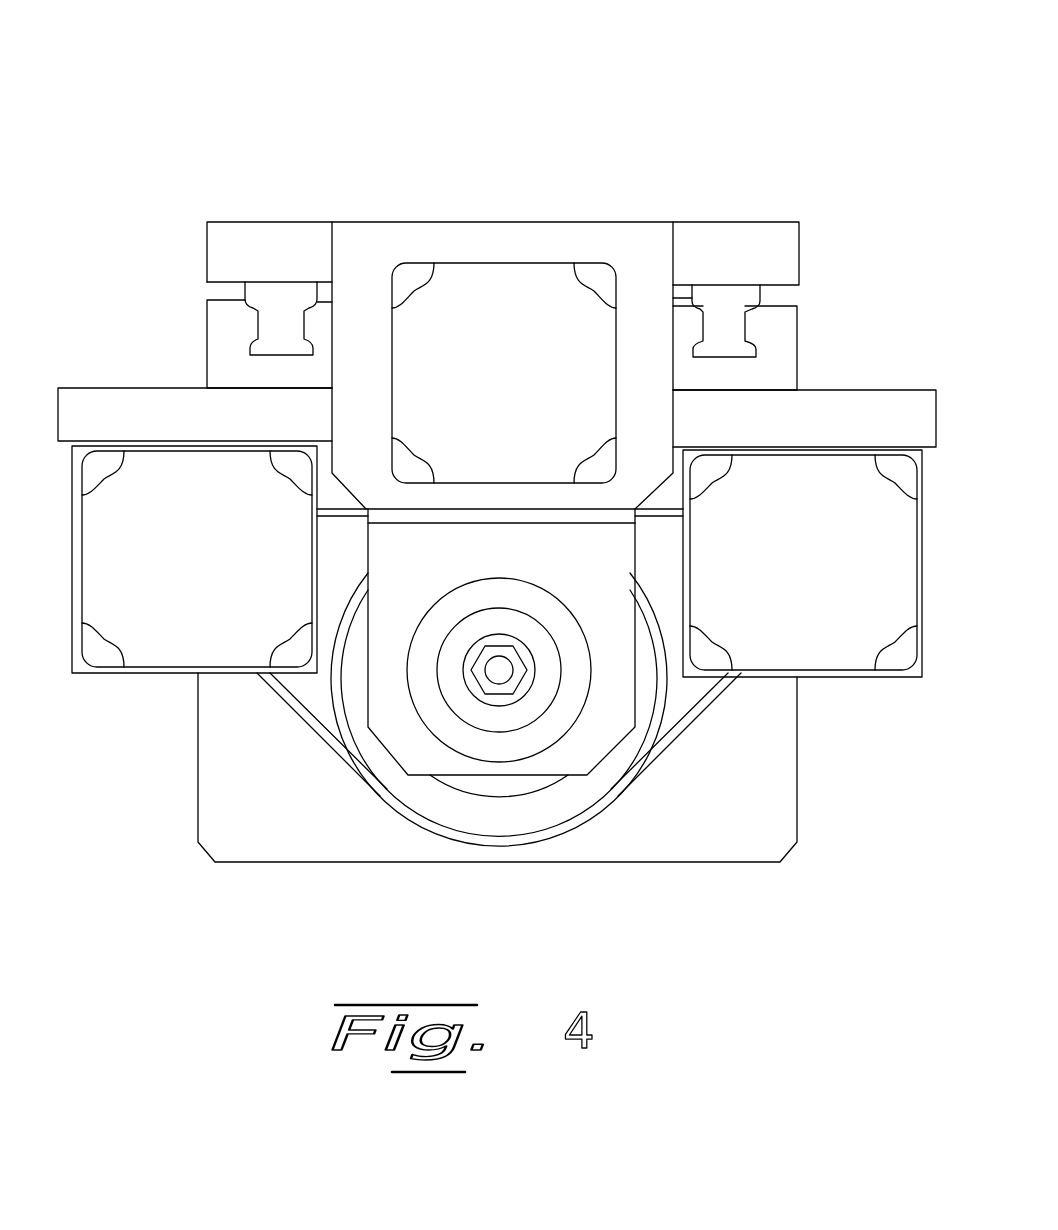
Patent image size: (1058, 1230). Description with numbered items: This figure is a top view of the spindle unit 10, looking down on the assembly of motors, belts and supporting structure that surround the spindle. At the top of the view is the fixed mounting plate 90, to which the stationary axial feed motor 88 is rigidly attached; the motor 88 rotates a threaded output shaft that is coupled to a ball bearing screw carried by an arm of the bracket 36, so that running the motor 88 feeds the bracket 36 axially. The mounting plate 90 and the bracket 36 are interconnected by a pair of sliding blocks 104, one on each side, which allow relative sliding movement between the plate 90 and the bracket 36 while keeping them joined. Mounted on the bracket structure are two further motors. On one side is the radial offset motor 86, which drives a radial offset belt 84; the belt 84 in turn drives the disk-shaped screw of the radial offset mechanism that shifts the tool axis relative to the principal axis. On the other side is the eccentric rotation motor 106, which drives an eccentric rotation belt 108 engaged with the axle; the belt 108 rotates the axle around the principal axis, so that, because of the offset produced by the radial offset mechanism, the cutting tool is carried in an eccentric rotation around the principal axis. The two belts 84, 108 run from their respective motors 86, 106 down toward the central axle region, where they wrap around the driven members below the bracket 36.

The spindle unit 10 is at (647, 103).
The bracket 36 is at (255, 385).
The radial offset belt 84 is at (700, 707).
The radial offset motor 86 is at (823, 527).
The axial feed motor 88 is at (475, 356).
The mounting plate 90 is at (737, 248).
The sliding blocks 104 is at (267, 290).
The eccentric rotation motor 106 is at (222, 527).
The eccentric rotation belt 108 is at (300, 718).